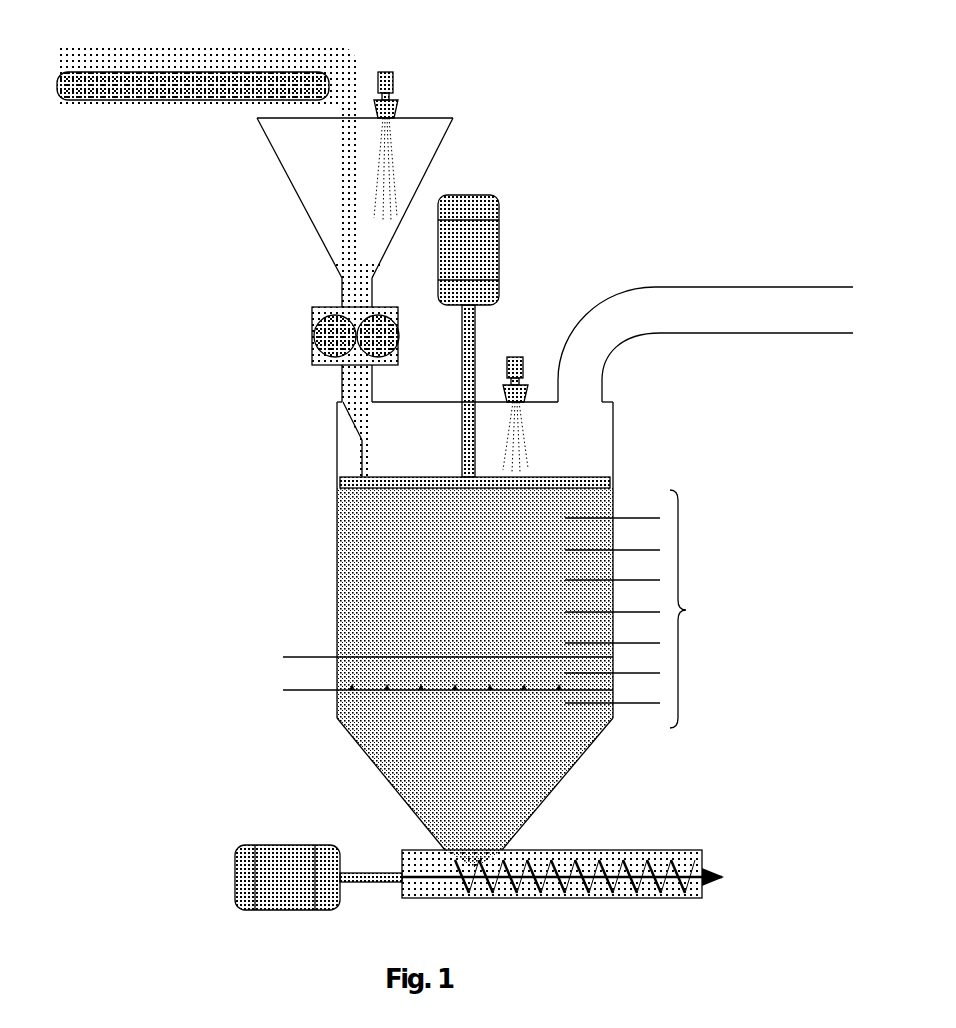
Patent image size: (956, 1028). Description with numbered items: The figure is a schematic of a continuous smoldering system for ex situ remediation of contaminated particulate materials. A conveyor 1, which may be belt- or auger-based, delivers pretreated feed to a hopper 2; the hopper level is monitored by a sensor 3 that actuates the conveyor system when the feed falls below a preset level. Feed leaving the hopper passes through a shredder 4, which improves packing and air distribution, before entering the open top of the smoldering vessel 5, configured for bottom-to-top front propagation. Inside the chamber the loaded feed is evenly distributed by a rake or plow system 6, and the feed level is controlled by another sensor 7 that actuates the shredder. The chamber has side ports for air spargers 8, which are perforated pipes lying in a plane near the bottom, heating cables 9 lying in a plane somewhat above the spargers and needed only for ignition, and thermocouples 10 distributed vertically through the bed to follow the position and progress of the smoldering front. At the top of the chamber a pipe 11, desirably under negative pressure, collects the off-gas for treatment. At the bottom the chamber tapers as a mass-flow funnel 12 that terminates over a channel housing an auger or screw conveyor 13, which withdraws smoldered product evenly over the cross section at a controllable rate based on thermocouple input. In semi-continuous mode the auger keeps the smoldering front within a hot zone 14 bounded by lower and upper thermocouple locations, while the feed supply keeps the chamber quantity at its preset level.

The conveyor 1 is at (207, 145).
The hopper 2 is at (341, 212).
The sensor 3 is at (400, 82).
The shredder 4 is at (307, 330).
The smoldering vessel 5 is at (327, 550).
The rake or plow system 6 is at (500, 197).
The sensor 7 is at (528, 347).
The air spargers 8 is at (396, 690).
The heating cables 9 is at (391, 657).
The thermocouples 10 is at (691, 609).
The pipe 11 is at (705, 344).
The mass-flow funnel 12 is at (525, 793).
The auger or screw conveyor 13 is at (530, 890).
The hot zone 14 is at (475, 600).